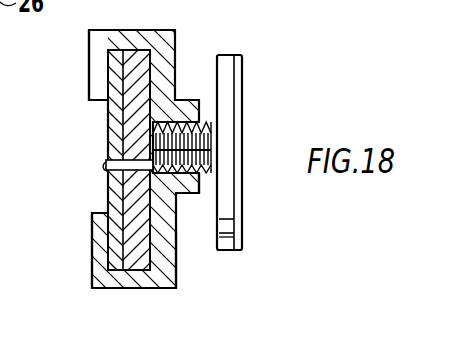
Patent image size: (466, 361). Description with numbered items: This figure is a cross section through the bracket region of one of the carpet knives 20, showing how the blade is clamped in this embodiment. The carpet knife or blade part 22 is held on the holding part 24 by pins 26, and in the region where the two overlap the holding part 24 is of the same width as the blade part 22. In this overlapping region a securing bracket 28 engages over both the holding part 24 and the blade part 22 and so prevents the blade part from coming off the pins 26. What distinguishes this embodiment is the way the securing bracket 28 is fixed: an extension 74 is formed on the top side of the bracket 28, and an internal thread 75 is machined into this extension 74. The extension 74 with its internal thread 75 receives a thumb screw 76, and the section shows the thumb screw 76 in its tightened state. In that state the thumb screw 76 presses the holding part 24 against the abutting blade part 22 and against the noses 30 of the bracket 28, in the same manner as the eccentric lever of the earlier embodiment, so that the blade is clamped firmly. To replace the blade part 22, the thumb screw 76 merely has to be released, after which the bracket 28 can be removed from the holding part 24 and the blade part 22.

The knife 20 is at (304, 19).
The blade part 22 is at (107, 112).
The holding part 24 is at (160, 289).
The pins 26 is at (106, 163).
The securing bracket 28 is at (186, 256).
The noses 30 is at (96, 88).
The extension 74 is at (177, 194).
The internal thread 75 is at (201, 122).
The thumb screw 76 is at (242, 143).